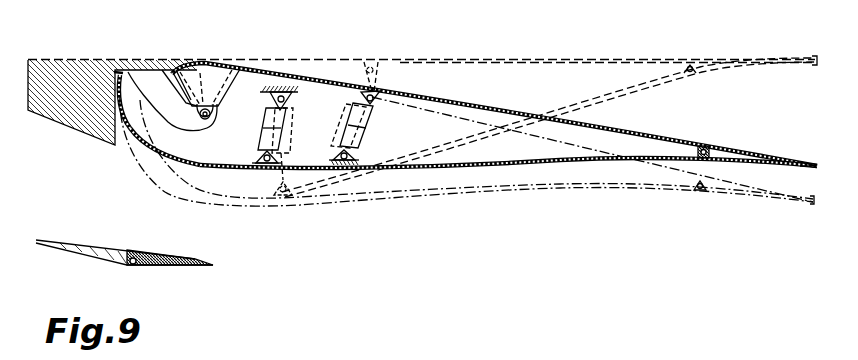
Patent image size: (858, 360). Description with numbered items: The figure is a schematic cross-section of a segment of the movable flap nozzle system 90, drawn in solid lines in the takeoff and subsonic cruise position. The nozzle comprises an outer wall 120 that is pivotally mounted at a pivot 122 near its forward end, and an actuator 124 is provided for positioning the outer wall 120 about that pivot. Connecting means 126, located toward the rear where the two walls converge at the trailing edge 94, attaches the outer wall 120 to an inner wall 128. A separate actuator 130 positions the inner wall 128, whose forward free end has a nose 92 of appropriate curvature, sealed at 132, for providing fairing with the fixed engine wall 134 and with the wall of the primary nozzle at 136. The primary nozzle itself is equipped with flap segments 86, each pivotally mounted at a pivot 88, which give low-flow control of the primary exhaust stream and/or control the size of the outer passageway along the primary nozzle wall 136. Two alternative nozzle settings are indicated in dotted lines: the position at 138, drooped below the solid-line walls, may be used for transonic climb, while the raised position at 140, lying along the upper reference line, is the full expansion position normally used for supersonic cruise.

The flap segment 86 is at (188, 260).
The pivot mounting of flap segment 88 is at (131, 264).
The flap nozzle system 90 is at (308, 60).
The nose skin 92 is at (182, 162).
The trailing edge 94 is at (803, 161).
The outer wall 120 is at (517, 110).
The pivot mounting of outer wall 122 is at (208, 108).
The actuator 124 is at (368, 127).
The connecting means 126 is at (703, 146).
The inner wall 128 is at (397, 168).
The actuator 130 is at (266, 125).
The seal 132 is at (115, 85).
The engine wall 134 is at (80, 135).
The wall of primary nozzle 136 is at (70, 237).
The transonic climb position 138 is at (795, 203).
The full expansion position 140 is at (792, 59).